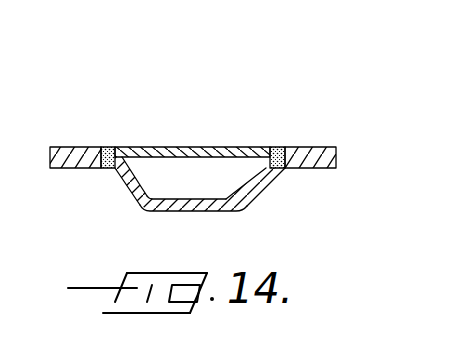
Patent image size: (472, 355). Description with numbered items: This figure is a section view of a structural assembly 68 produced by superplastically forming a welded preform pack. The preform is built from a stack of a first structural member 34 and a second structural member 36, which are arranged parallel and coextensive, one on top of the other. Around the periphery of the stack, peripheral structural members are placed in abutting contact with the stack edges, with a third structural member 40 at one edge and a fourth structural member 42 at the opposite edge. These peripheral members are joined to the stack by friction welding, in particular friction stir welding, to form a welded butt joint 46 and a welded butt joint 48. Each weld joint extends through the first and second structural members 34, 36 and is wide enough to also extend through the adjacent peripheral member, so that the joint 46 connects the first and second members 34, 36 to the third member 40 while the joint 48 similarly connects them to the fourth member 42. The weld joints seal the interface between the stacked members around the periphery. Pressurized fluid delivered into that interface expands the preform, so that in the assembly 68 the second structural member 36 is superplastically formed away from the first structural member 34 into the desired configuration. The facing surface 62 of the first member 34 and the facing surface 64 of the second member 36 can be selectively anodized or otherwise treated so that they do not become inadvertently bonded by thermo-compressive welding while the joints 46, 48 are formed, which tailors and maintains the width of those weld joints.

The third peripheral structural member 40 is at (66, 158).
The fourth peripheral structural member 42 is at (312, 162).
The first structural member 34 is at (193, 147).
The welded butt joint 46 is at (109, 147).
The welded butt joint 48 is at (281, 147).
The facing surface 62 is at (151, 173).
The facing surface 64 is at (193, 198).
The second structural member 36 is at (247, 190).
The structural assembly 68 is at (249, 111).